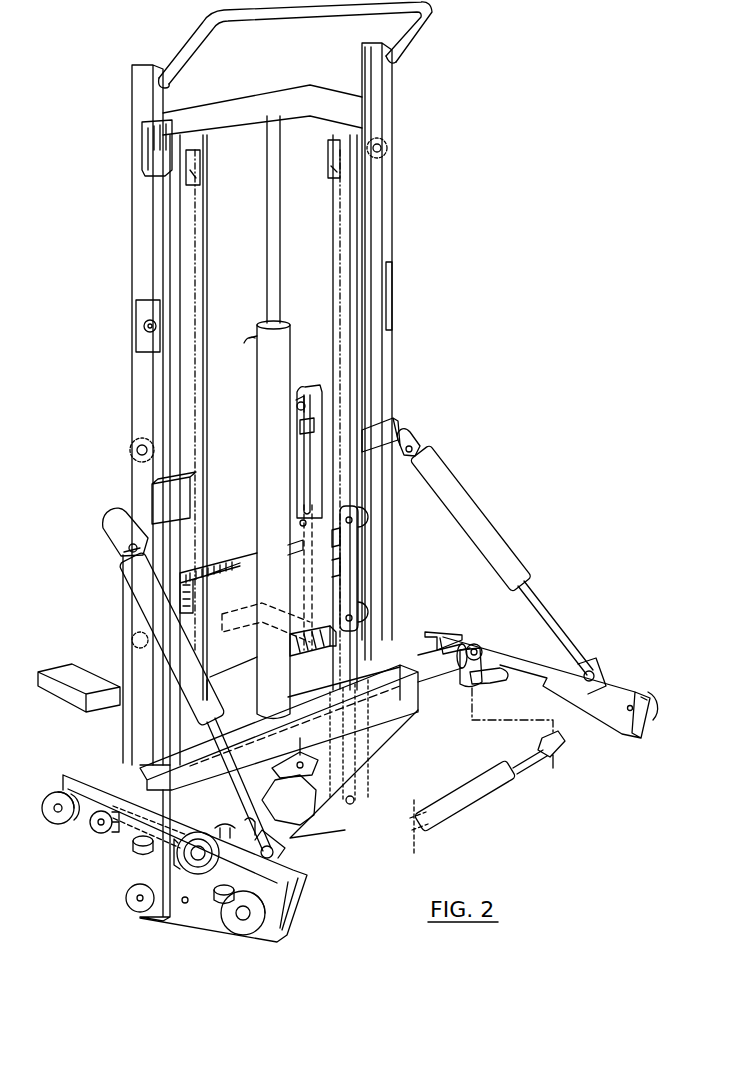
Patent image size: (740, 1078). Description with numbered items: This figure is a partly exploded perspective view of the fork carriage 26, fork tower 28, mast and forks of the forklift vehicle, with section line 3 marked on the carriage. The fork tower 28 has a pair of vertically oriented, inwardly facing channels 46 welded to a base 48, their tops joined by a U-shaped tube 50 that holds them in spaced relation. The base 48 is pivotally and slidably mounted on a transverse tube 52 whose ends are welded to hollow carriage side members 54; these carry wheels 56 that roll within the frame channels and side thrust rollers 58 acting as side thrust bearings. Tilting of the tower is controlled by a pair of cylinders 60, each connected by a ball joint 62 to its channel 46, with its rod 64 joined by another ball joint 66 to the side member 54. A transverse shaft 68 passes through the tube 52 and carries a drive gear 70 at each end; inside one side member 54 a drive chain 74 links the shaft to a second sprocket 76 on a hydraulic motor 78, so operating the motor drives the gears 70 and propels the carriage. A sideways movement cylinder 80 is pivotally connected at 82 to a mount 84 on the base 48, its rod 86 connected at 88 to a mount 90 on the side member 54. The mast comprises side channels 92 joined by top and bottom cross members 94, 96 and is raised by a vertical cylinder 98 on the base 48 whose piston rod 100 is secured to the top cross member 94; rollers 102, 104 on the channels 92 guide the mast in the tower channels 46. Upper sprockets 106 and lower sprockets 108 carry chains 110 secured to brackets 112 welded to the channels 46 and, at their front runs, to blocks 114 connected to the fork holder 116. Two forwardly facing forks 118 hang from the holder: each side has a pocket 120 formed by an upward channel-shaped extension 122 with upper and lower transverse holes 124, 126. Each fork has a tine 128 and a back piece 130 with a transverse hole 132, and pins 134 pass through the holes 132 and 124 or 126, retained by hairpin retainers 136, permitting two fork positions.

The section line 3 is at (503, 645).
The fork carriage 26 is at (562, 609).
The fork tower 28 is at (427, 240).
The channels 46 is at (133, 90).
The base 48 is at (400, 718).
The U-shaped tube 50 is at (324, 6).
The transverse tube 52 is at (428, 668).
The carriage side member 54 is at (300, 903).
The wheels 56 is at (58, 792).
The side thrust rollers 58 is at (138, 852).
The cylinders 60 is at (203, 694).
The ball joint 62 is at (121, 549).
The rod 64 is at (240, 750).
The ball joint 66 is at (266, 856).
The transverse shaft 68 is at (466, 684).
The drive gear 70 is at (91, 824).
The drive chain 74 is at (120, 838).
The second sprocket 76 is at (220, 852).
The hydraulic motor 78 is at (225, 825).
The sideways movement cylinder 80 is at (488, 795).
The pivotal connection 82 is at (310, 778).
The mount 84 is at (280, 798).
The rod 86 is at (530, 758).
The pivotal connection 88 is at (500, 680).
The mount 90 is at (482, 690).
The side channels 92 is at (175, 240).
The top cross member 94 is at (290, 100).
The bottom cross member 96 is at (334, 828).
The cylinder 98 is at (284, 342).
The piston rod 100 is at (281, 262).
The rollers 102 is at (140, 163).
The rollers 104 is at (136, 326).
The upper sprockets 106 is at (200, 195).
The lower sprockets 108 is at (355, 800).
The chains 110 is at (203, 255).
The brackets 112 is at (190, 504).
The blocks 114 is at (326, 625).
The fork holder 116 is at (236, 562).
The forks 118 is at (99, 684).
The pockets 120 is at (334, 540).
The upward channel-shaped extension 122 is at (298, 456).
The upper transverse hole 124 is at (304, 385).
The lower transverse hole 126 is at (299, 522).
The tine 128 is at (60, 670).
The back piece 130 is at (328, 648).
The transverse hole 132 is at (298, 424).
The pins 134 is at (296, 407).
The hairpin retainers 136 is at (296, 398).